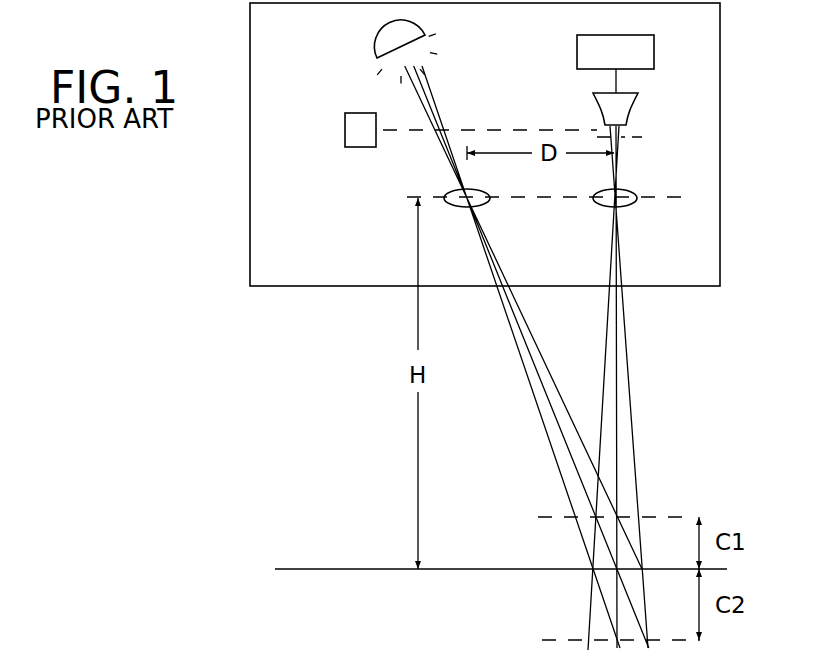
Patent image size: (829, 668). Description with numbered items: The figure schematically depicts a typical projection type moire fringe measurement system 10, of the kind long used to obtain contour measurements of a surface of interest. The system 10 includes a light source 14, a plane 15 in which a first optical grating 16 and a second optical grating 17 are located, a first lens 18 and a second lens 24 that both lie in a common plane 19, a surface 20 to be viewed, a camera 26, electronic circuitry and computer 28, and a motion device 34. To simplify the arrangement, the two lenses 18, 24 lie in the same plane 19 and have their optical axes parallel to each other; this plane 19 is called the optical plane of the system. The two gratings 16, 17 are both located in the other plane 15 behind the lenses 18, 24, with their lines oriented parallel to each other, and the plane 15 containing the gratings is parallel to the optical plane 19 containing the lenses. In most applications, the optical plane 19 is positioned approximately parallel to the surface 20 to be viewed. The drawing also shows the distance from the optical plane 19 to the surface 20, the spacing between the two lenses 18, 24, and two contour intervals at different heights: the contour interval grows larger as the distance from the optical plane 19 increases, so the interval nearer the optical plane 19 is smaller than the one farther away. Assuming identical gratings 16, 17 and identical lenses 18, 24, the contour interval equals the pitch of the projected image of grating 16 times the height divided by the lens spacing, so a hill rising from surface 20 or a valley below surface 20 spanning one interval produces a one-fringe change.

The projection type moire fringe measurement system 10 is at (720, 58).
The light source 14 is at (393, 51).
The plane 15 is at (570, 128).
The first optical grating 16 is at (452, 122).
The second optical grating 17 is at (646, 140).
The first lens 18 is at (458, 207).
The plane 19 is at (696, 197).
The surface 20 is at (355, 569).
The second lens 24 is at (633, 206).
The camera 26 is at (620, 110).
The electronic circuitry and computer 28 is at (645, 52).
The motion device 34 is at (360, 130).